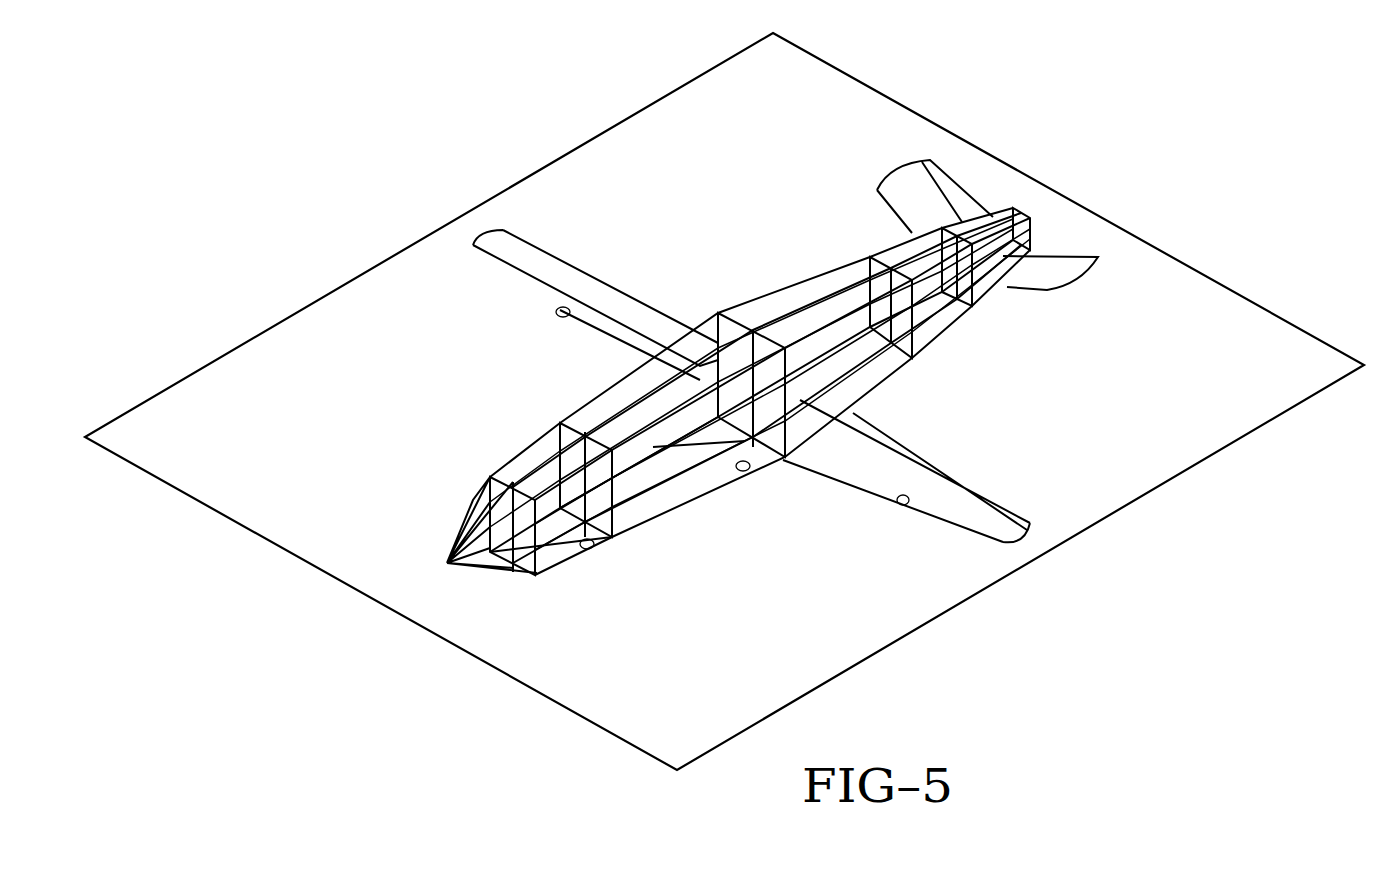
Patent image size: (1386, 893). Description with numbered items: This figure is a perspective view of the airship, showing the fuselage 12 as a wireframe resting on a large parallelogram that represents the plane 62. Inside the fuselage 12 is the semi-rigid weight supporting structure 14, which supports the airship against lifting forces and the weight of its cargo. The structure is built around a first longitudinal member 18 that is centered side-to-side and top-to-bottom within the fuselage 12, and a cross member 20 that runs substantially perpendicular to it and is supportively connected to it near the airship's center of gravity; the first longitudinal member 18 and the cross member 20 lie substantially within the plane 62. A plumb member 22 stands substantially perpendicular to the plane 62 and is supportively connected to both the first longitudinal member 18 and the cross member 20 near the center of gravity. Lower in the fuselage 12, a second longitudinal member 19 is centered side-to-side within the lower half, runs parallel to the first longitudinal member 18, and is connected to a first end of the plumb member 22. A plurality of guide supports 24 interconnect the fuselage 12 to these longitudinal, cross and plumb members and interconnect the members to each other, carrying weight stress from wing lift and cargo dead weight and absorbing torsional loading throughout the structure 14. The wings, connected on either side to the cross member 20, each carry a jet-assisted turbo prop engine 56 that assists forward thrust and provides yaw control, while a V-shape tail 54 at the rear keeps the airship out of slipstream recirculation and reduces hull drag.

The fuselage 12 is at (738, 413).
The weight supporting structure 14 is at (612, 527).
The first longitudinal member 18 is at (545, 492).
The second longitudinal member 19 is at (670, 478).
The cross member 20 is at (718, 332).
The plumb member 22 is at (753, 438).
The guide supports 24 is at (843, 268).
The V-shape tail 54 is at (890, 185).
The jet-assisted turbo prop engine 56 is at (750, 472).
The plane 62 is at (962, 605).